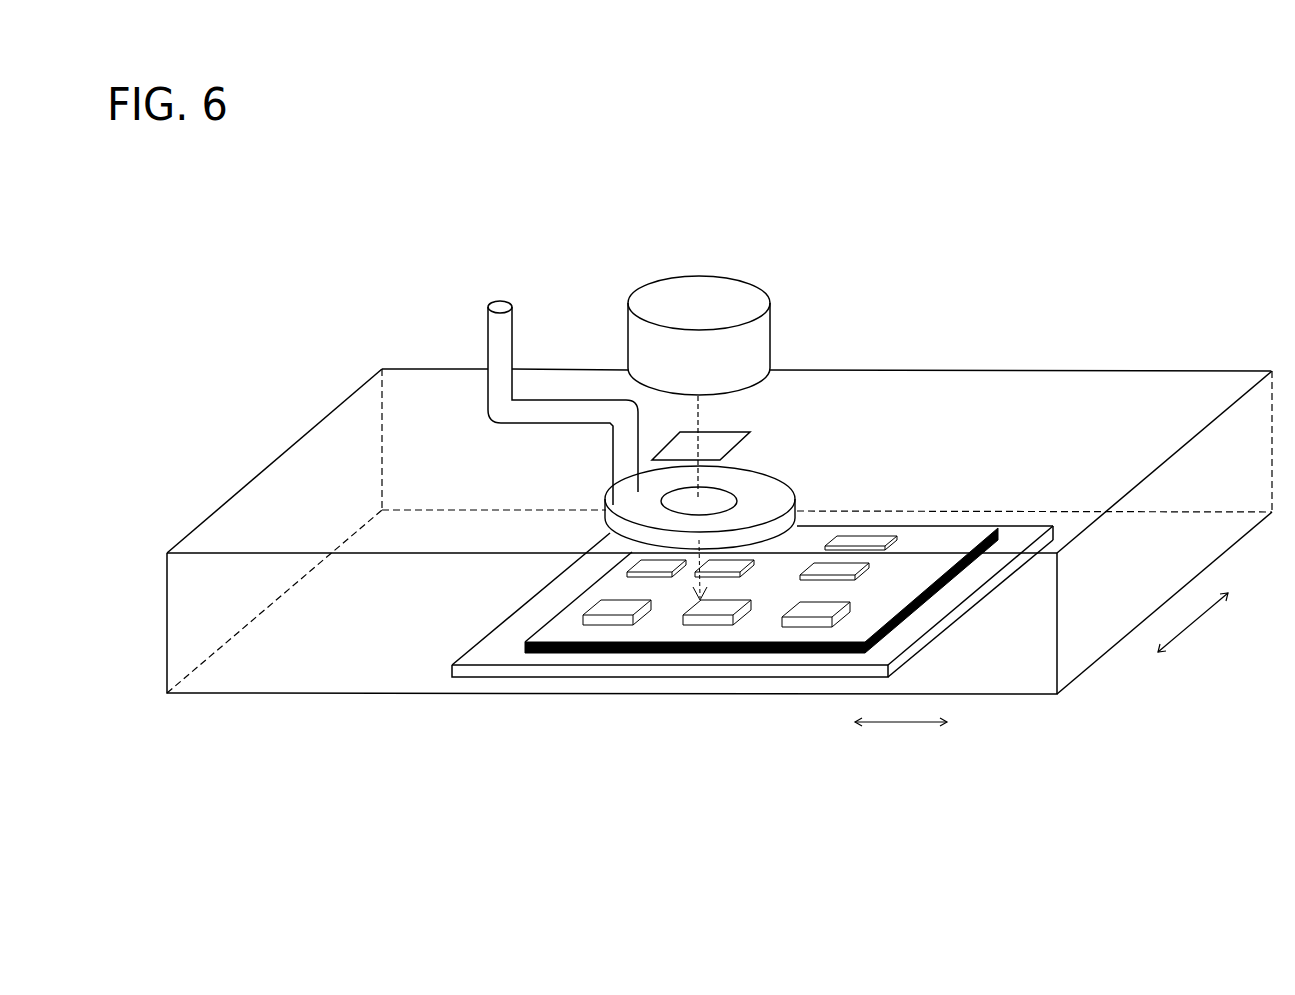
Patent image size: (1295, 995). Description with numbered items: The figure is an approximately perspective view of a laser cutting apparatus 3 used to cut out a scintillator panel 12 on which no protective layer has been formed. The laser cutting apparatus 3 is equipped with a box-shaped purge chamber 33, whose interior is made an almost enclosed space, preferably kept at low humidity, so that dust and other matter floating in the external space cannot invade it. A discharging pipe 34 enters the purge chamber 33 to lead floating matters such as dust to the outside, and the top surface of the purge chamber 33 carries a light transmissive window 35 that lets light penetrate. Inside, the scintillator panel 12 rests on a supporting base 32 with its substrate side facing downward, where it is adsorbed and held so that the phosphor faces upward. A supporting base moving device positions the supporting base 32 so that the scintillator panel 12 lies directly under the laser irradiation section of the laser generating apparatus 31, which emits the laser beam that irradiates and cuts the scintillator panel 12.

The laser cutting apparatus 3 is at (943, 243).
The scintillator panel 12 is at (570, 653).
The laser generating apparatus 31 is at (753, 338).
The supporting base 32 is at (660, 674).
The purge chamber 33 is at (342, 394).
The discharging pipe 34 is at (514, 318).
The light transmissive window 35 is at (746, 436).